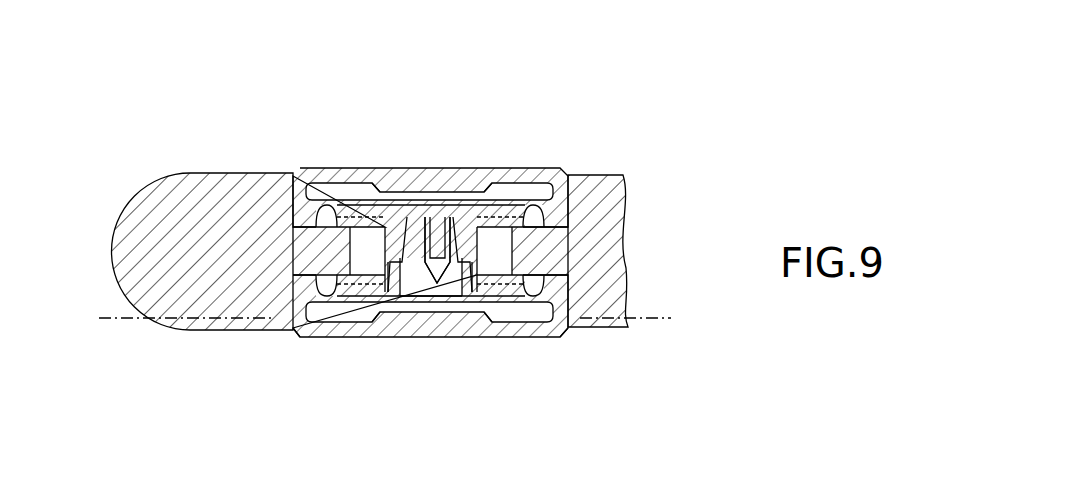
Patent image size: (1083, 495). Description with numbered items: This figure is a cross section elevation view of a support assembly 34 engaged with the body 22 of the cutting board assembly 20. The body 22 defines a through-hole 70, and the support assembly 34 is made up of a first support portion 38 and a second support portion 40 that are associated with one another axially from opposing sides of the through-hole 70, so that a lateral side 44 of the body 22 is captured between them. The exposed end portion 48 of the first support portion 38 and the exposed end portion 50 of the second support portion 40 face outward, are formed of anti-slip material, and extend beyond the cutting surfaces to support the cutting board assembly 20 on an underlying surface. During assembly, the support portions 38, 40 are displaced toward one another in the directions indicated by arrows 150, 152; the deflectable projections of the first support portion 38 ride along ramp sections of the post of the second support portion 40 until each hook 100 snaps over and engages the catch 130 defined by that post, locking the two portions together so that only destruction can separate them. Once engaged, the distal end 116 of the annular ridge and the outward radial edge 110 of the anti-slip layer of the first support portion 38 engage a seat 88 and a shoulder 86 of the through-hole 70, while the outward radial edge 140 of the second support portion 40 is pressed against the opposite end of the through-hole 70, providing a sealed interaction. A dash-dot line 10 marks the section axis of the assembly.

The longitudinal axis 10 is at (99, 318).
The cutting board assembly 20 is at (667, 108).
The body 22 is at (138, 207).
The support assembly 34 is at (606, 66).
The first support portion 38 is at (549, 140).
The second support portion 40 is at (569, 385).
The lateral side 44 is at (333, 298).
The exposed end portion 48 is at (406, 166).
The exposed end portion 50 is at (443, 337).
The through-hole 70 is at (285, 117).
The shoulder 86 is at (322, 207).
The seat 88 is at (318, 222).
The hook 100 is at (440, 282).
The outward radial edge 110 is at (372, 172).
The distal end 116 is at (516, 222).
The catch 130 is at (385, 283).
The outward radial edge 140 is at (292, 325).
The arrow 150 is at (432, 78).
The arrow 152 is at (430, 372).